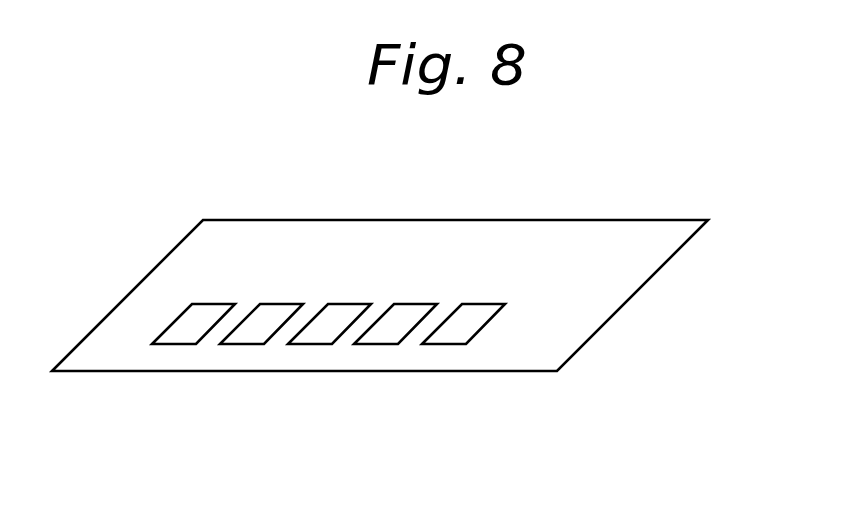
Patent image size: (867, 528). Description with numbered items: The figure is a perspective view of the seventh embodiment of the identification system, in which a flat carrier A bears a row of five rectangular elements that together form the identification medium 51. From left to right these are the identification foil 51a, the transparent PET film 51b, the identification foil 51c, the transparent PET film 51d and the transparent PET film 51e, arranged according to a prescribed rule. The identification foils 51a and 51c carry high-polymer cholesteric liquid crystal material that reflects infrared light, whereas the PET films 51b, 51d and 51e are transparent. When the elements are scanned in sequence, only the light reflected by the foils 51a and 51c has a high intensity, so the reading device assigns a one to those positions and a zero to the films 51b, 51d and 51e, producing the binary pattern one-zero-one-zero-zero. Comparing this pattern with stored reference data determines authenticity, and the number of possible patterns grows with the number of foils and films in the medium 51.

The substrate plate A is at (595, 313).
The electrode pad group 51 is at (502, 377).
The identification foil 51a is at (203, 314).
The transparent PET film 51b is at (270, 314).
The identification foil 51c is at (343, 315).
The transparent PET film 51d is at (400, 314).
The transparent PET film 51e is at (477, 315).